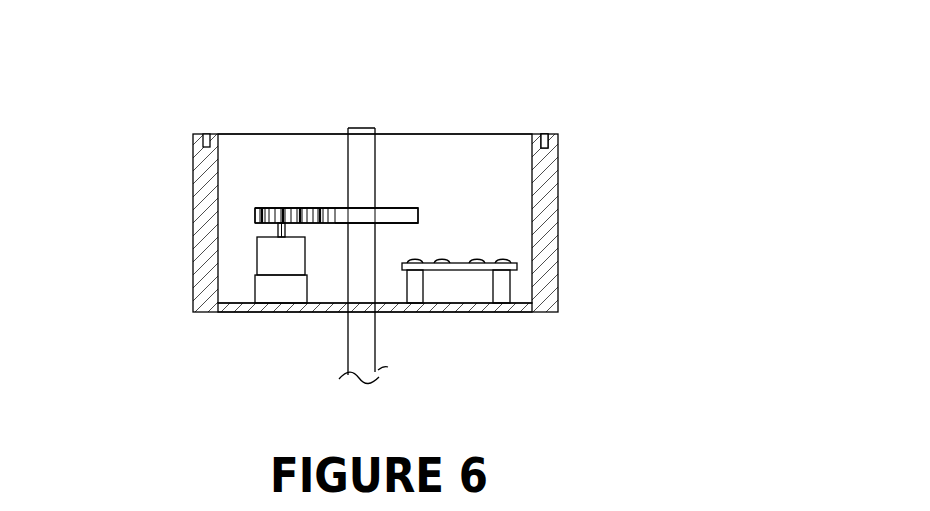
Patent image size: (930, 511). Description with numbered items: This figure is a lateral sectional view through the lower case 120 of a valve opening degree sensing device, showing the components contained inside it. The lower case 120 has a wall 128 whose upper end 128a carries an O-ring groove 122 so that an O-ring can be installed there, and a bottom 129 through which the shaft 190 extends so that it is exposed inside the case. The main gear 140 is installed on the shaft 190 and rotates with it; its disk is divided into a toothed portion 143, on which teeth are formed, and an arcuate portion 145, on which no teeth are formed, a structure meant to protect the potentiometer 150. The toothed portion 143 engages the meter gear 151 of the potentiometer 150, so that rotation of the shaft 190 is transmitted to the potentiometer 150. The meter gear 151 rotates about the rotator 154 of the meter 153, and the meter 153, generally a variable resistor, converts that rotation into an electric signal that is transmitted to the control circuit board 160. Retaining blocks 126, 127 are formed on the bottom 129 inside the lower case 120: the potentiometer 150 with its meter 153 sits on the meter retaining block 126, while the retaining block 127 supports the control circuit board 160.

The lower case 120 is at (548, 187).
The O-ring groove 122 is at (545, 139).
The meter retaining block 126 is at (277, 299).
The retaining block 127 is at (505, 287).
The wall 128 is at (205, 165).
The upper end 128a is at (552, 137).
The bottom 129 is at (525, 308).
The main gear 140 is at (414, 198).
The toothed portion 143 is at (323, 208).
The arcuate portion 145 is at (397, 208).
The potentiometer 150 is at (257, 196).
The meter gear 151 is at (290, 208).
The meter 153 is at (272, 268).
The rotator 154 is at (278, 229).
The control circuit board 160 is at (508, 264).
The shaft 190 is at (367, 343).